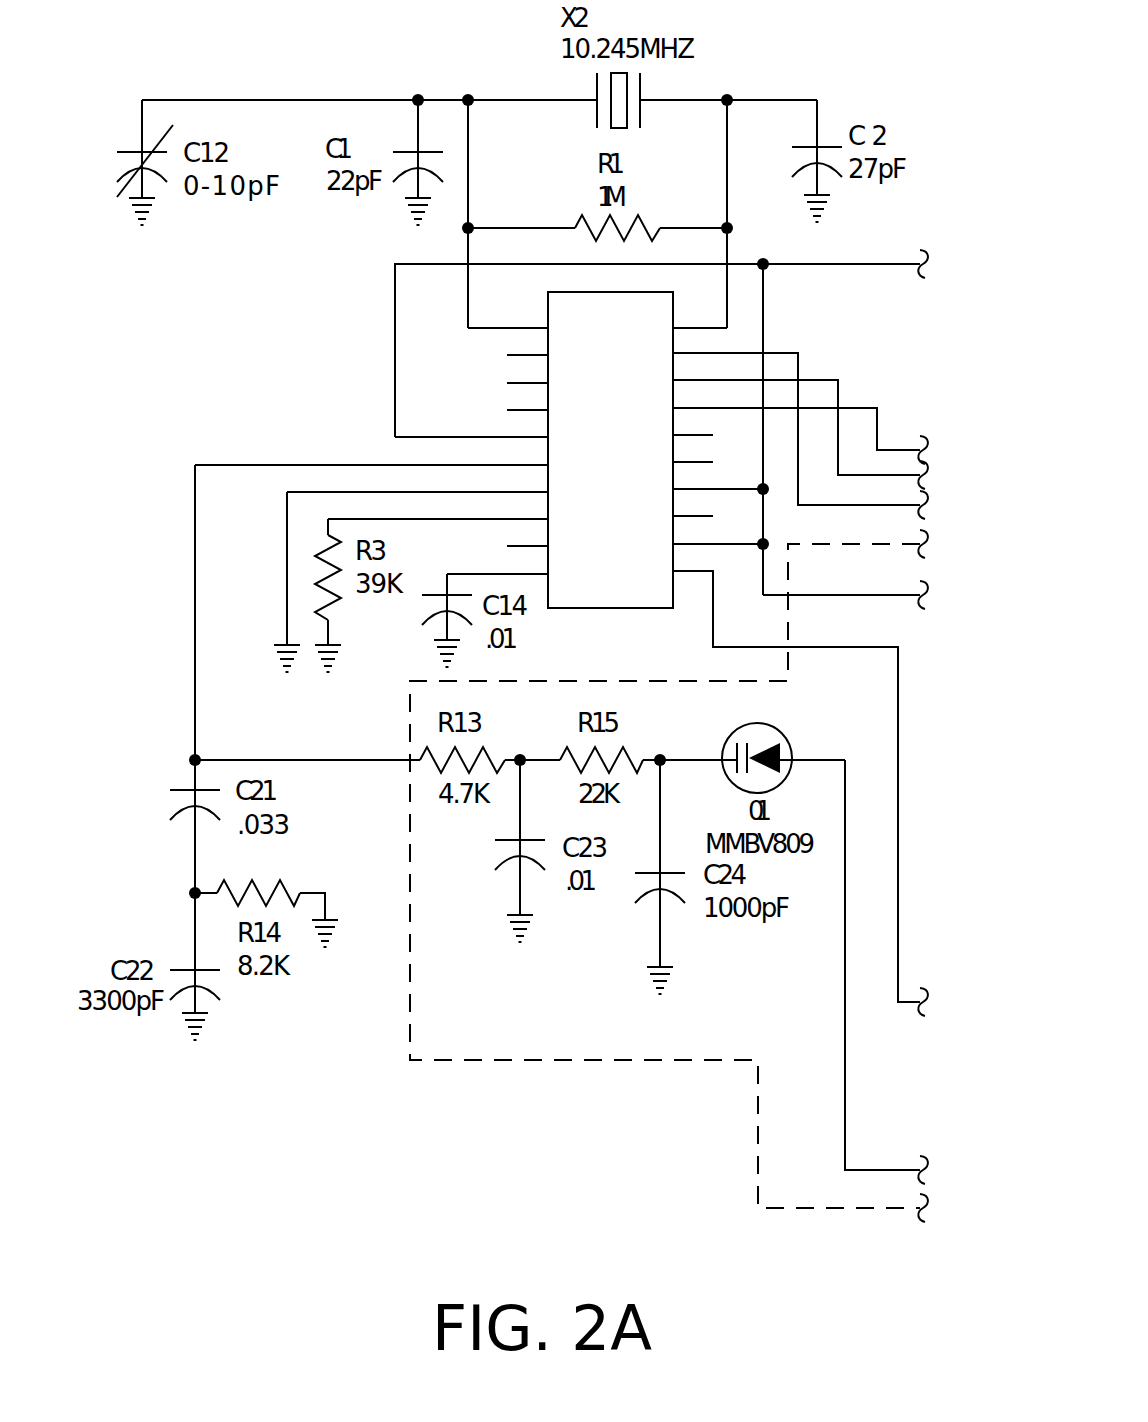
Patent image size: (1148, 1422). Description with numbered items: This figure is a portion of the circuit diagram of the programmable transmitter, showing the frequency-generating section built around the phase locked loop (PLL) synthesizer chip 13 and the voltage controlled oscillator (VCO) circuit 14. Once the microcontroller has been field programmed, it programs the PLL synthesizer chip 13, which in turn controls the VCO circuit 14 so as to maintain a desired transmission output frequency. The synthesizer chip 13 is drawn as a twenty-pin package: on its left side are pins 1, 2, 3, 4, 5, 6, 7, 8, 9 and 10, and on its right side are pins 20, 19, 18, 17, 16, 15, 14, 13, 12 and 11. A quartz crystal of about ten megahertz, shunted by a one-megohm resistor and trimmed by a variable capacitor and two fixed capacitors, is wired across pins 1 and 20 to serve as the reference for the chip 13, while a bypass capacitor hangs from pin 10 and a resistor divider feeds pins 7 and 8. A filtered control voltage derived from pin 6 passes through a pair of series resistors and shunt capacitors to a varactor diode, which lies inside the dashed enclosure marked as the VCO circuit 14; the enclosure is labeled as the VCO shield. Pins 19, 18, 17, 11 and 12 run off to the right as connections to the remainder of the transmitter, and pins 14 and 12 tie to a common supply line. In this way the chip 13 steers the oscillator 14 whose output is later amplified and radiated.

The phase locked loop synthesizer chip 13 is at (561, 625).
The voltage controlled oscillator circuit 14 is at (742, 1143).
The pin 1 of U1 1 is at (508, 317).
The pin 2 of U1 2 is at (527, 344).
The pin 3 of U1 3 is at (527, 372).
The pin 4 of U1 4 is at (527, 399).
The pin 5 of U1 5 is at (471, 426).
The pin 6 of U1 6 is at (371, 454).
The pin 7 of U1 7 is at (417, 481).
The pin 8 of U1 8 is at (438, 508).
The pin 9 of U1 9 is at (527, 535).
The battery 10 is at (497, 563).
The microcontroller 11 is at (800, 781).
The magnetic switch 12 is at (718, 533).
The final amplifier 15 is at (693, 451).
The antenna 16 is at (693, 424).
The pin 17 of U1 17 is at (800, 424).
The pin 18 of U1 18 is at (800, 422).
The pin 19 of U1 19 is at (800, 424).
The pin 20 of U1 20 is at (700, 317).